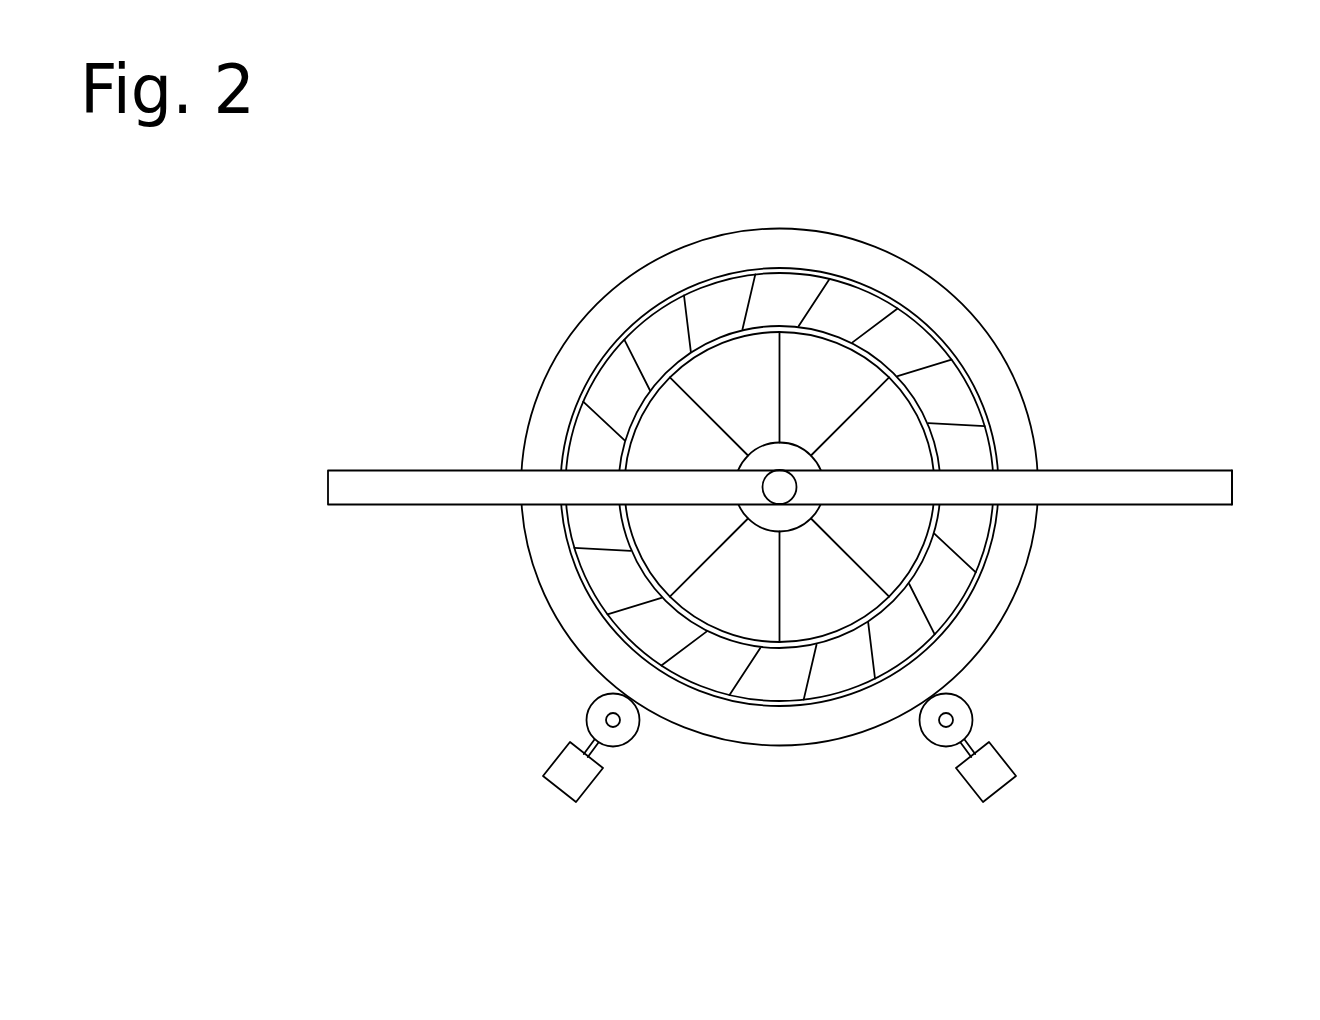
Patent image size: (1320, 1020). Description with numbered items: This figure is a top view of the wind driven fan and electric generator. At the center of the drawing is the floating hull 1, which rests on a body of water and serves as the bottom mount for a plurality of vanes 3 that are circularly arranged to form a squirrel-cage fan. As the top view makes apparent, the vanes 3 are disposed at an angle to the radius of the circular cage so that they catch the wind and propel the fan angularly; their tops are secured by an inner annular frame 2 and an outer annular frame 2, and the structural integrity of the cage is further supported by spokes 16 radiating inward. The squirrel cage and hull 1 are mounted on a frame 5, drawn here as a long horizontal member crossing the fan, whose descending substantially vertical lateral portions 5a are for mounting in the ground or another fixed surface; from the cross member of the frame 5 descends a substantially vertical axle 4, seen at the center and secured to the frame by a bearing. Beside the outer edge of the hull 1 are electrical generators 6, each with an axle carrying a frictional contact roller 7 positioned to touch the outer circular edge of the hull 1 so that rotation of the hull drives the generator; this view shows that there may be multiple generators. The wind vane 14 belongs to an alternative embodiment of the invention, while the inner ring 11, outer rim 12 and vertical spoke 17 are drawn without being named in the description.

The floating hull 1 is at (918, 251).
The annular frame 2 is at (732, 330).
The vanes 3 is at (633, 357).
The axle 4 is at (787, 483).
The frame 5 is at (1118, 470).
The lateral portions 5a is at (1232, 488).
The electrical generator 6 is at (552, 758).
The frictional contact roller 7 is at (632, 742).
The inner ring 11 is at (792, 322).
The outer rim 12 is at (607, 580).
The wind vane 14 is at (817, 605).
The spokes 16 is at (705, 437).
The vertical spokes 17 is at (762, 533).